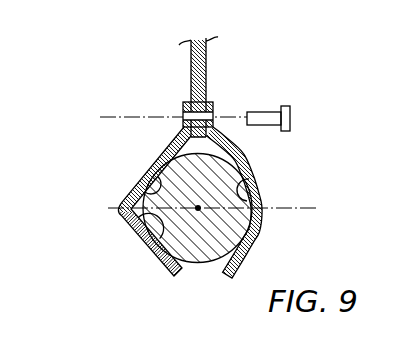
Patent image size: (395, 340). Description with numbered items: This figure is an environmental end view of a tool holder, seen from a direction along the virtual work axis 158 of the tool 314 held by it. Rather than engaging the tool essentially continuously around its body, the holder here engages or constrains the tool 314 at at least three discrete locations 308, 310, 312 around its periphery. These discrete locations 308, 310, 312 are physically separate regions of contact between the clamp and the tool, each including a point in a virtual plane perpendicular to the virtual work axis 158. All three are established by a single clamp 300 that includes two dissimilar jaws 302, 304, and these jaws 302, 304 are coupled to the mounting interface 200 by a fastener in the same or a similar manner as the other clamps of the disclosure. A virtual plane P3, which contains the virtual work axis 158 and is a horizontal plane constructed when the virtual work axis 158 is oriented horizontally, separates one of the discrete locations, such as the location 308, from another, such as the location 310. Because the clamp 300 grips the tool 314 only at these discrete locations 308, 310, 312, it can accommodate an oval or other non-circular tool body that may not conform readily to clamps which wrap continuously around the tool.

The mounting interface 200 is at (207, 60).
The clamp 300 is at (266, 72).
The virtual work axis 158 is at (198, 207).
The jaw 302 is at (152, 252).
The jaw 304 is at (255, 240).
The discrete location 308 is at (150, 188).
The discrete location 310 is at (134, 216).
The discrete location 312 is at (257, 183).
The tool 314 is at (197, 263).
The virtual plane P3 is at (103, 209).